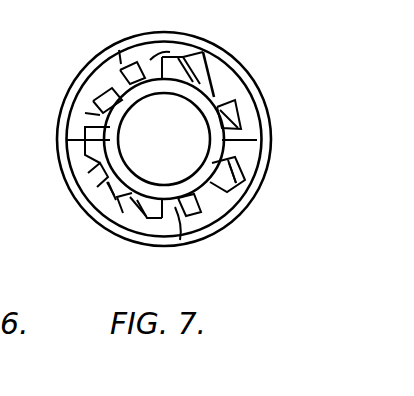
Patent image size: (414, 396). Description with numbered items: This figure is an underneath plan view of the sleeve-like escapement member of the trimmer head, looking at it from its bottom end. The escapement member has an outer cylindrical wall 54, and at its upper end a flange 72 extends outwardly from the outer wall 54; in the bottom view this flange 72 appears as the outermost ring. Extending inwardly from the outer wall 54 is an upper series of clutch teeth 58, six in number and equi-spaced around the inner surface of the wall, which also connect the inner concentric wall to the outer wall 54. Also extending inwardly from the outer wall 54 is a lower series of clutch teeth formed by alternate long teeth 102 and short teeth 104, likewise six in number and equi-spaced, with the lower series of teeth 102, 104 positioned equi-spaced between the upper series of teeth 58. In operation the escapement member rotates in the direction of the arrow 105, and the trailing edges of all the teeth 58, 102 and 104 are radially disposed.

The outer cylindrical wall 54 is at (248, 125).
The upper series of clutch teeth 58 is at (122, 80).
The flange 72 is at (65, 152).
The long teeth 102 is at (153, 62).
The short teeth 104 is at (217, 97).
The arrow 105 is at (285, 98).